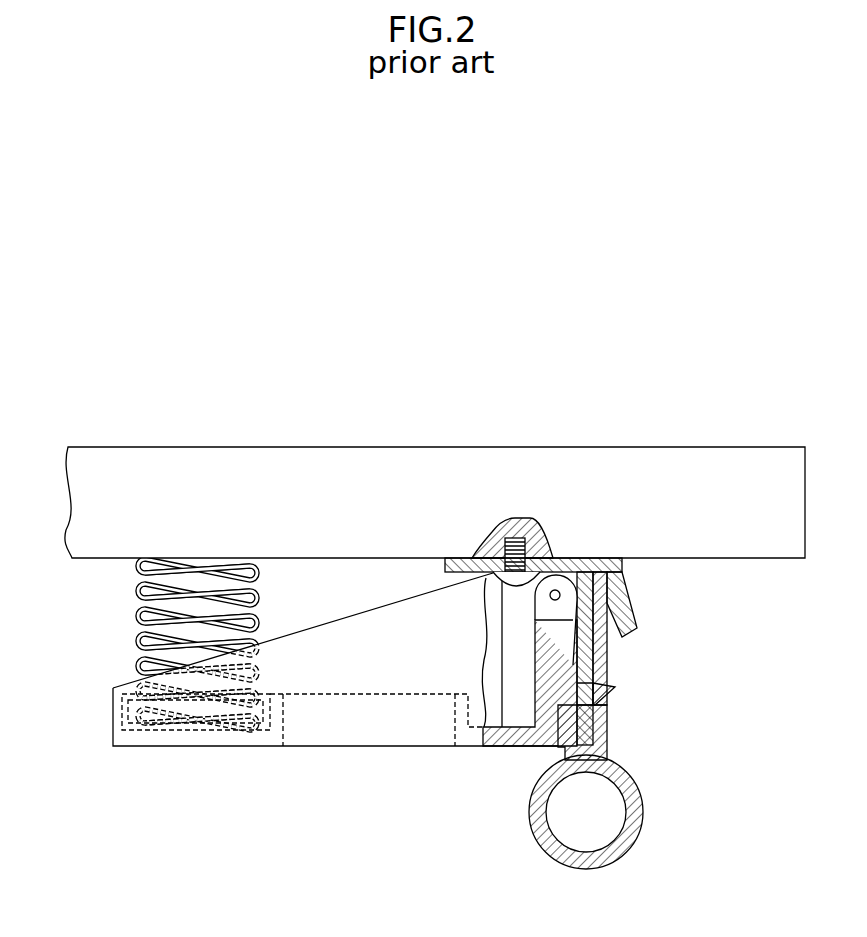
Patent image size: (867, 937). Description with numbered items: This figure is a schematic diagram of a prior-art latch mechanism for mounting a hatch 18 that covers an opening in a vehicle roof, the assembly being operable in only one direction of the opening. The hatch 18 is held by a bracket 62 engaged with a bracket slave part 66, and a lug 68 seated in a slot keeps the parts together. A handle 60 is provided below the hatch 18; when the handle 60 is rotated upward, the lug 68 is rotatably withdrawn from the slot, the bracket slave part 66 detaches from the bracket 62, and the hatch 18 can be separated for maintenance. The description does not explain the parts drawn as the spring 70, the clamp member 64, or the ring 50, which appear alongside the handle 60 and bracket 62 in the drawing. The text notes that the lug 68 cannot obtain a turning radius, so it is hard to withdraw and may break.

The hatch 18 is at (400, 441).
The hose / tube 50 is at (623, 847).
The handle 60 is at (367, 733).
The bracket 62 is at (618, 580).
The clamp member 64 is at (603, 745).
The bracket slave part 66 is at (607, 618).
The lug 68 is at (617, 690).
The compression spring 70 is at (143, 640).